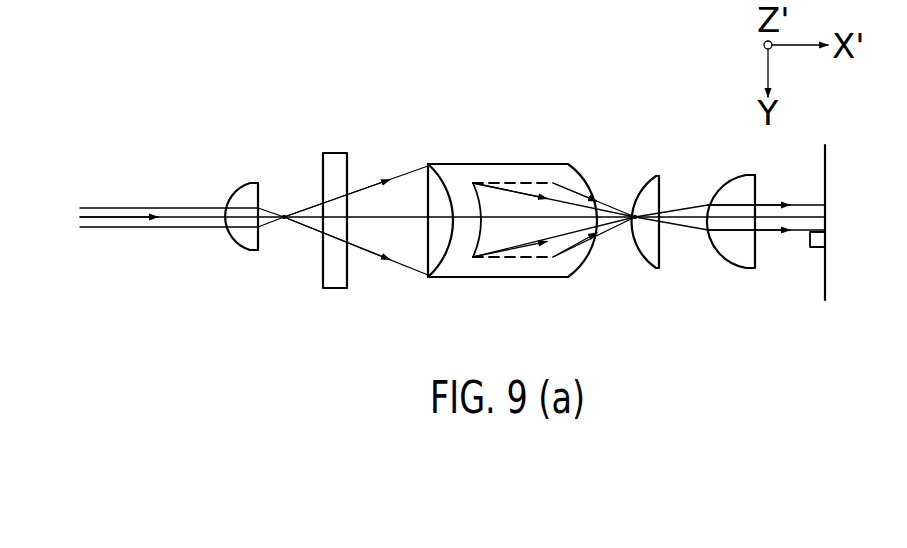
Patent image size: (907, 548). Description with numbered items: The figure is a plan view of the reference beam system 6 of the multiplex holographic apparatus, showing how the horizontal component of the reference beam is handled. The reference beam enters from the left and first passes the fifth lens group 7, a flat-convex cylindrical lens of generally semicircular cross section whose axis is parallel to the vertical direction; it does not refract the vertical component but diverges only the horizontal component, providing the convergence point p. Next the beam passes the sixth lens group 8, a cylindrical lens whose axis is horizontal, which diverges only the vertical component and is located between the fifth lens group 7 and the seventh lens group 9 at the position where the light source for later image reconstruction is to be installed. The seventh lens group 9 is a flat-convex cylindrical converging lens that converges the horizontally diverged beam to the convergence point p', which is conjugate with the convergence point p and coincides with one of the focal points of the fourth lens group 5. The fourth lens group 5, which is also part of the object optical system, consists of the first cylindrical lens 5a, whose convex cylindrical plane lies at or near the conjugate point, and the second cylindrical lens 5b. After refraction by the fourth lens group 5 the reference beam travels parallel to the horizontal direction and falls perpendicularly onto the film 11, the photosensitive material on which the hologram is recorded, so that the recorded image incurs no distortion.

The fifth lens group 7 is at (240, 192).
The convergence point p is at (261, 263).
The sixth lens group 8 is at (330, 152).
The seventh lens group 9 is at (487, 164).
The reference beam system 6 is at (490, 292).
The convergence point p' is at (604, 274).
The fourth lens group 5 is at (728, 228).
The first cylindrical lens 5a is at (647, 268).
The second cylindrical lens 5b is at (738, 269).
The film 11 is at (828, 280).